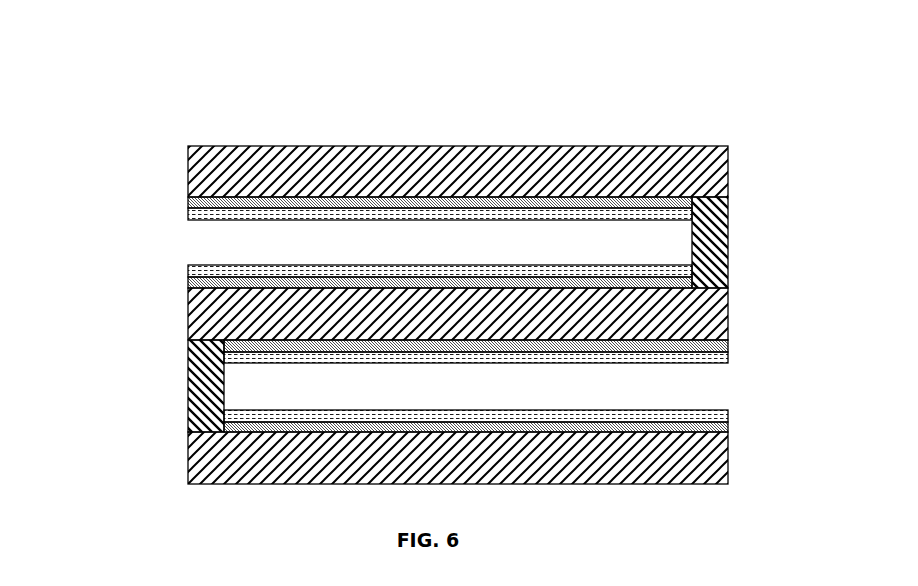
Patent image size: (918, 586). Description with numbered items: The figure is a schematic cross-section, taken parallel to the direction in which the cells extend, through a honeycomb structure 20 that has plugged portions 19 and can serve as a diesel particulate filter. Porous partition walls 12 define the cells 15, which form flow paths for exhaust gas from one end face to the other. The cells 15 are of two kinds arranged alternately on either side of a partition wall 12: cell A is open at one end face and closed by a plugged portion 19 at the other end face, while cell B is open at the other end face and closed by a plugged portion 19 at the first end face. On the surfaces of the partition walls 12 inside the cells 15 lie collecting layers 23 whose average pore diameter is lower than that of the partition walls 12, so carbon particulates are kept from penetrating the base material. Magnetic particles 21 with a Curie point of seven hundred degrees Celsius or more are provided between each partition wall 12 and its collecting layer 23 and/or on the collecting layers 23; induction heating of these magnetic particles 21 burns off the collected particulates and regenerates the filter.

The honeycomb structure 20 is at (422, 249).
The partition wall 12 is at (166, 148).
The cell 15 is at (422, 333).
The plugged portion 19 is at (728, 265).
The magnetic particle 21 is at (240, 410).
The collecting layer 23 is at (188, 290).